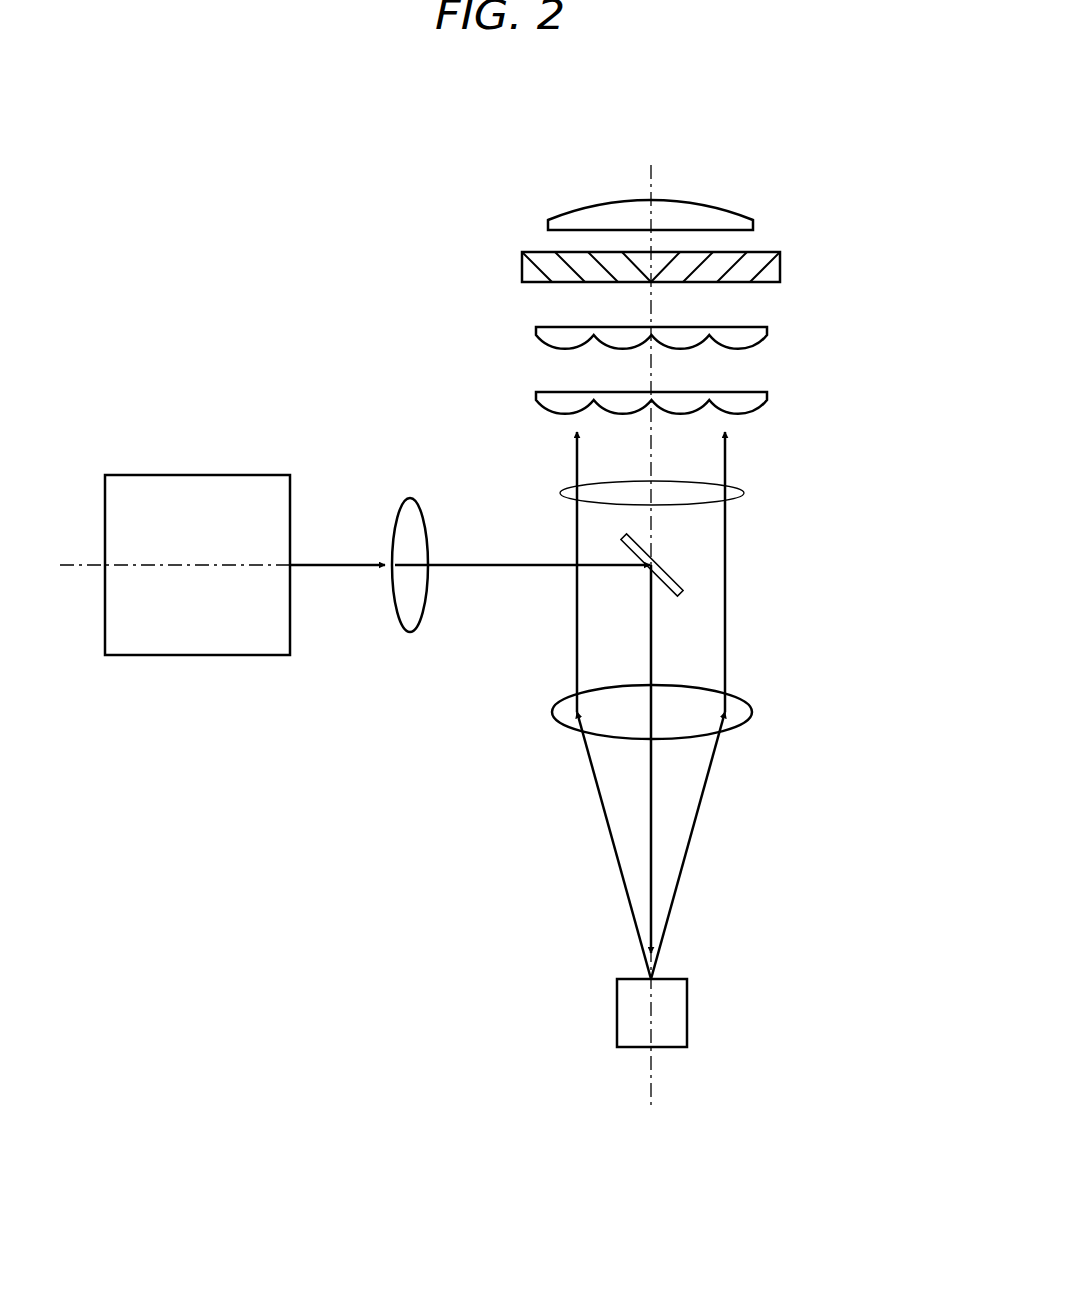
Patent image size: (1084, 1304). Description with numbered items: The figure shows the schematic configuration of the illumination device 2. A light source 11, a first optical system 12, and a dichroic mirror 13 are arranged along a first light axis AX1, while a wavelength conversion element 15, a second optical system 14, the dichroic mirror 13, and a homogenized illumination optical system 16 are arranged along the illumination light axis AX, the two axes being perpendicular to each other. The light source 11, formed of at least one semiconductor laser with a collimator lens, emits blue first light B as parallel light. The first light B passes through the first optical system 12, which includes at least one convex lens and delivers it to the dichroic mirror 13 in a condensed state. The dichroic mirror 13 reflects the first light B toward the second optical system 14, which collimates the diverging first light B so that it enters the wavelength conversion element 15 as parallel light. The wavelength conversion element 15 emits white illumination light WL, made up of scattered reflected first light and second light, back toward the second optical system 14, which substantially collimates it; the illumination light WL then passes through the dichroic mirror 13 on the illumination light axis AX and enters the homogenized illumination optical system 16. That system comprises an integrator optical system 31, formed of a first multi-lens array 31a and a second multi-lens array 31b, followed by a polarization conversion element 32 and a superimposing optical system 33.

The illumination device 2 is at (745, 153).
The light source 11 is at (216, 485).
The first optical system 12 is at (410, 515).
The dichroic mirror 13 is at (667, 567).
The second optical system 14 is at (735, 708).
The wavelength conversion element 15 is at (677, 1007).
The homogenized illumination optical system 16 is at (741, 308).
The integrator optical system 31 is at (720, 372).
The first multi-lens array 31a is at (748, 403).
The second multi-lens array 31b is at (752, 343).
The polarization conversion element 32 is at (780, 270).
The superimposing optical system 33 is at (745, 217).
The first light B is at (338, 565).
The illumination light axis AX is at (652, 1090).
The first light axis AX1 is at (82, 565).
The illumination light WL is at (735, 484).